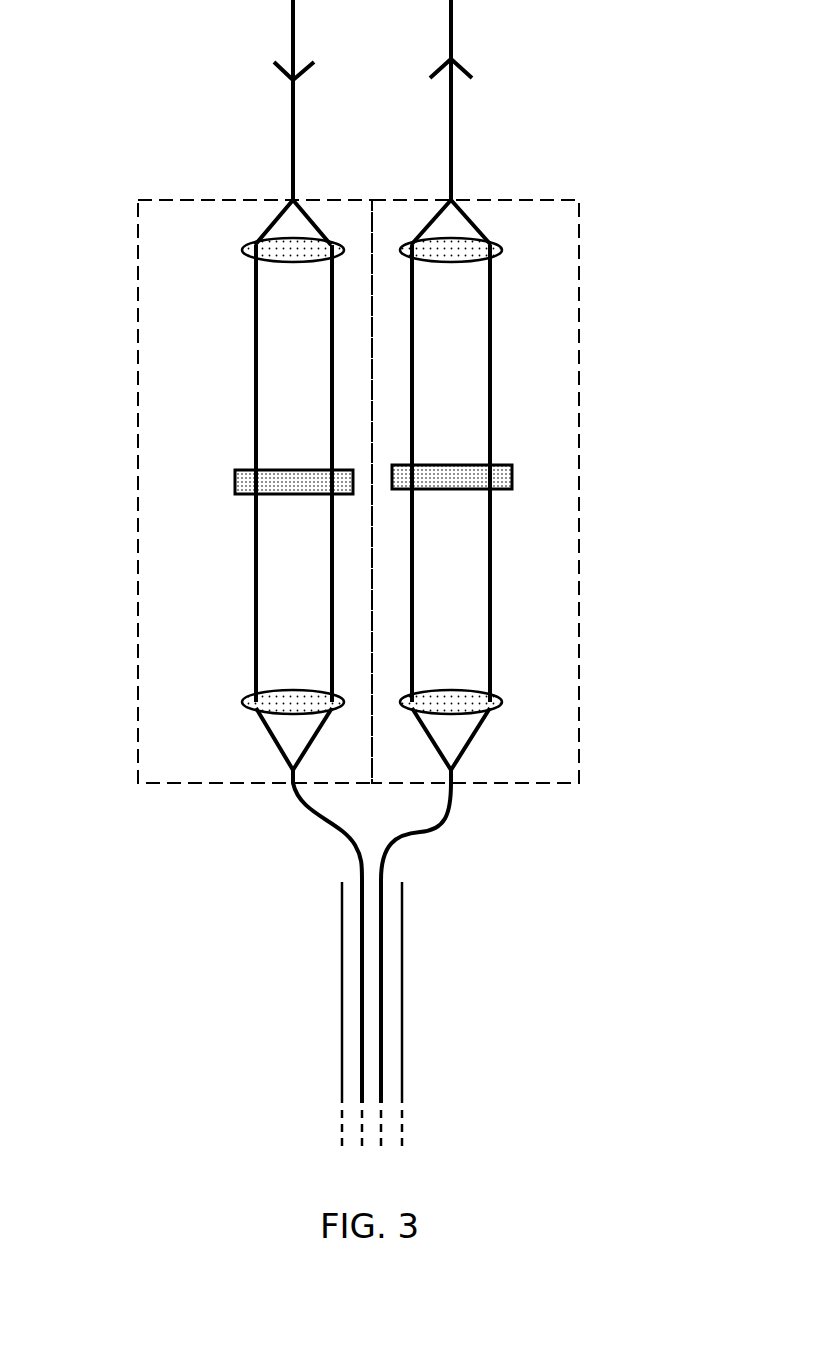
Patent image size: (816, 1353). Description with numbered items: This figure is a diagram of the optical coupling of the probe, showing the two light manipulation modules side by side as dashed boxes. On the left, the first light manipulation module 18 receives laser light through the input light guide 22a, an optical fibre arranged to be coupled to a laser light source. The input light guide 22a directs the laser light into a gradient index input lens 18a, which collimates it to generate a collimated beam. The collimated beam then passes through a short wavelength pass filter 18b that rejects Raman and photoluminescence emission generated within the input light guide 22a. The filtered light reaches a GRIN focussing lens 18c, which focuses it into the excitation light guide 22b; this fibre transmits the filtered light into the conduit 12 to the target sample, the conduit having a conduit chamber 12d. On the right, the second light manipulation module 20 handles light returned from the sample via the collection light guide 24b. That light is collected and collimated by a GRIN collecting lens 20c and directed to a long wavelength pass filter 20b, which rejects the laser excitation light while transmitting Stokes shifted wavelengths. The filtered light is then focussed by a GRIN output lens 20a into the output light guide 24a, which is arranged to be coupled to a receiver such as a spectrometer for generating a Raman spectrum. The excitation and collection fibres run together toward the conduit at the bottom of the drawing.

The conduit 12 is at (380, 1016).
The conduit chamber 12d is at (352, 1032).
The first light manipulation module 18 is at (128, 462).
The input lens 18a is at (252, 253).
The short wavelength pass filter 18b is at (235, 488).
The focussing lens 18c is at (245, 701).
The second light manipulation module 20 is at (590, 440).
The output lens 20a is at (502, 252).
The long wavelength pass filter 20b is at (512, 477).
The collecting lens 20c is at (502, 702).
The input light guide 22a is at (293, 147).
The excitation light guide 22b is at (352, 843).
The output light guide 24a is at (452, 150).
The collection light guide 24b is at (395, 836).